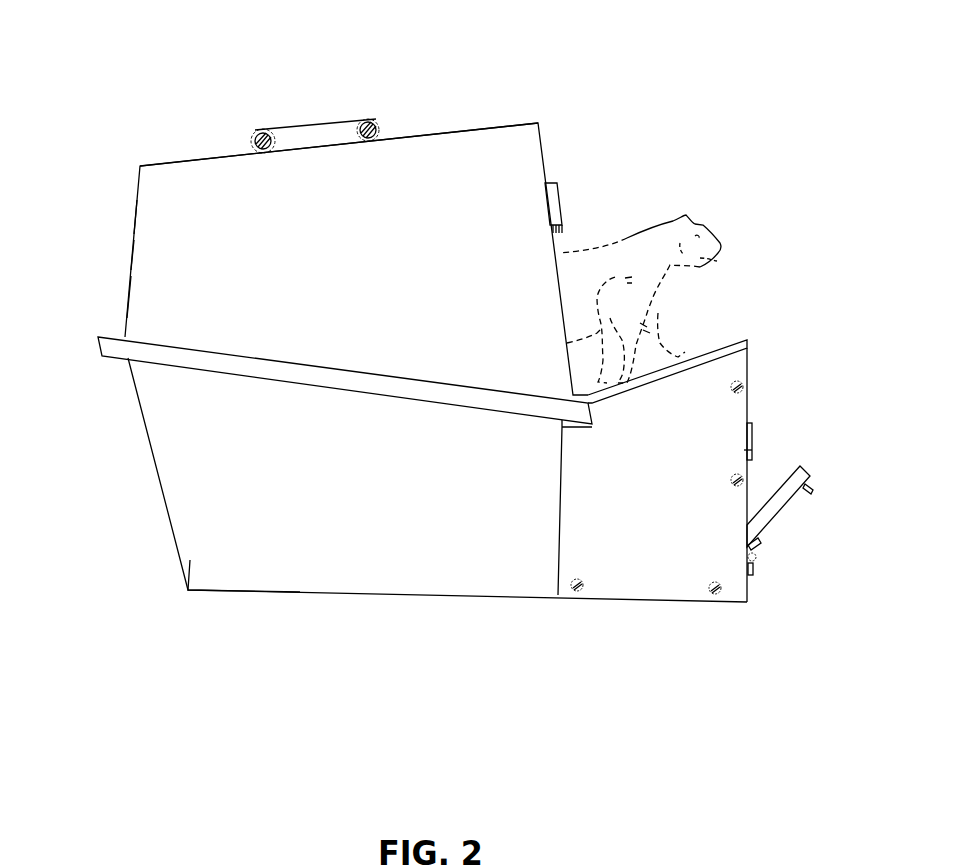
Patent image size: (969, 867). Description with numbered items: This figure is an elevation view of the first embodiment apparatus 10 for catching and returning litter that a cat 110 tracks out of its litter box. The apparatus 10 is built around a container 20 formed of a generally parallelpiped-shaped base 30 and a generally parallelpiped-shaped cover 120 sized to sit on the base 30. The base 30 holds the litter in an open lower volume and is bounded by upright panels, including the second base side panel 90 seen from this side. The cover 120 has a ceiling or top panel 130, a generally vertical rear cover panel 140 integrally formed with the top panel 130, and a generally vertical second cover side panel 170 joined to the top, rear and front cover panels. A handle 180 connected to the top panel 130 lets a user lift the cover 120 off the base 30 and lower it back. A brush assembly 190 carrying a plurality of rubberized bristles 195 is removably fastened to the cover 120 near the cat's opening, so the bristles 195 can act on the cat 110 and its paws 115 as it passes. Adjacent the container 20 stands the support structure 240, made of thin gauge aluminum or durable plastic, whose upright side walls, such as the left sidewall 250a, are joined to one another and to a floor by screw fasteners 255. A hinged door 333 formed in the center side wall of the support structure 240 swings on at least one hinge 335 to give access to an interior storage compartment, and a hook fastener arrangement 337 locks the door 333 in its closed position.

The first embodiment apparatus 10 is at (451, 335).
The container 20 is at (351, 236).
The base 30 is at (422, 469).
The second base side panel 90 is at (210, 576).
The cat 110 is at (698, 227).
The paws 115 is at (685, 335).
The cover 120 is at (132, 232).
The top panel 130 is at (208, 158).
The rear cover panel 140 is at (132, 265).
The second cover side panel 170 is at (140, 303).
The handle 180 is at (307, 125).
The brush assembly 190 is at (560, 190).
The rubberized bristles 195 is at (562, 228).
The support structure 240 is at (705, 480).
The left sidewall 250a is at (603, 592).
The screw fastener 255 is at (744, 386).
The hinged door 333 is at (775, 512).
The hinge 335 is at (753, 567).
The hook fastener arrangement 337 is at (752, 425).